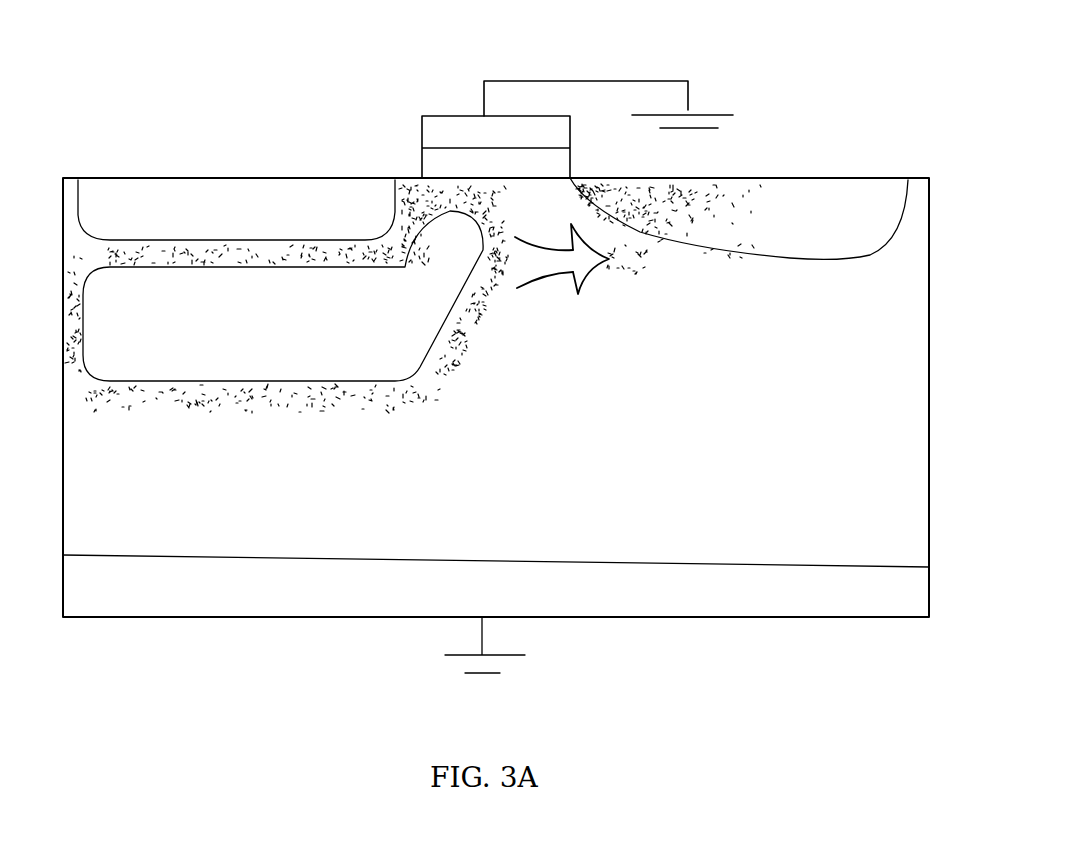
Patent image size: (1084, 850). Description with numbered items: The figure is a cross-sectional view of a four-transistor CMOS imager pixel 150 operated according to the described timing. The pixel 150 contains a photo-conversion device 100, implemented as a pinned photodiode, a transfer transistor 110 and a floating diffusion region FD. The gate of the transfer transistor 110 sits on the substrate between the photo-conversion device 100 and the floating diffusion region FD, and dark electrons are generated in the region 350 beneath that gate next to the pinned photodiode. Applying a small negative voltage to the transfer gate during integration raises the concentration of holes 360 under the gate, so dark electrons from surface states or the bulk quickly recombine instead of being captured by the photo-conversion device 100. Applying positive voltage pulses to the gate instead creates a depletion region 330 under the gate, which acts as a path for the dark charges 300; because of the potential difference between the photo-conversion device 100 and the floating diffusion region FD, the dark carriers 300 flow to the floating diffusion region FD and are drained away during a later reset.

The photo-conversion device 100 is at (496, 425).
The transfer transistor 110 is at (420, 134).
The pixel 150 is at (586, 100).
The dark charges 300 is at (450, 383).
The depletion region 330 is at (558, 259).
The region 350 is at (479, 311).
The holes 360 is at (470, 215).
The floating diffusion region FD is at (675, 229).